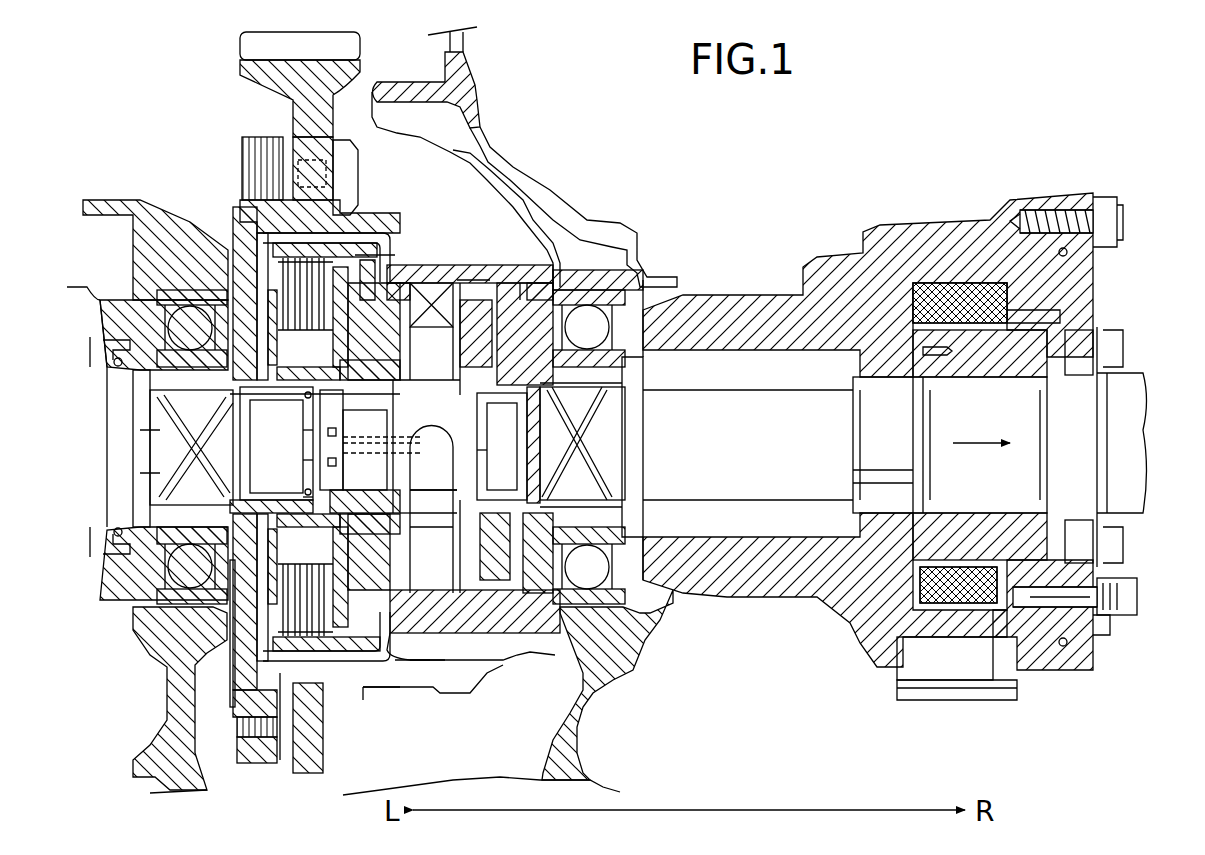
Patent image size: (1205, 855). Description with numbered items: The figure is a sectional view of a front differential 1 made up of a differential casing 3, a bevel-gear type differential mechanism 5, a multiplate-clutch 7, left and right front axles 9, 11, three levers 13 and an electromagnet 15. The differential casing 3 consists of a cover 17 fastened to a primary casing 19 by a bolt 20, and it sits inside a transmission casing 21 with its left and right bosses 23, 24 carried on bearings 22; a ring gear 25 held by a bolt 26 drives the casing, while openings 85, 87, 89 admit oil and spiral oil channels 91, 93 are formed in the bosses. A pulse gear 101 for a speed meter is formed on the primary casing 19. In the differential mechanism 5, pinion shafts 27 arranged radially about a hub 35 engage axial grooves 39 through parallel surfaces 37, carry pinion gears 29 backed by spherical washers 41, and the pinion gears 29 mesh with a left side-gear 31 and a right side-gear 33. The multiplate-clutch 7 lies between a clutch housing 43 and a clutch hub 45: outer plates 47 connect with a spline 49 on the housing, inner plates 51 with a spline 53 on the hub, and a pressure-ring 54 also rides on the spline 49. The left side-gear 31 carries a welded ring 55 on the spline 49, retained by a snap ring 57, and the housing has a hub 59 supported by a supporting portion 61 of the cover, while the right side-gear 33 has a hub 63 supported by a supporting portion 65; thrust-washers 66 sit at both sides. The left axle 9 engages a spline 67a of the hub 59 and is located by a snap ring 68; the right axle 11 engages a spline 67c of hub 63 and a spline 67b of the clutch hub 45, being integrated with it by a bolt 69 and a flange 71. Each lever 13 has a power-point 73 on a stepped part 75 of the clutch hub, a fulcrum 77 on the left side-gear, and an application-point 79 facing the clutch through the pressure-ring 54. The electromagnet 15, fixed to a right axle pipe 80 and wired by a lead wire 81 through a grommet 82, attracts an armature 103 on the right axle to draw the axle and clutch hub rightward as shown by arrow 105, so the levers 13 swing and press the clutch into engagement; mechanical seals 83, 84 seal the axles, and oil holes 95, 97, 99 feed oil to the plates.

The front differential 1 is at (902, 116).
The differential casing 3 is at (266, 134).
The bevel-gear type differential mechanism 5 is at (470, 650).
The multiplate-clutch 7 is at (333, 228).
The left front axle 9 is at (125, 470).
The right front axle 11 is at (732, 445).
The lever 13 is at (385, 226).
The electromagnet 15 is at (965, 200).
The cover 17 is at (256, 248).
The primary casing 19 is at (440, 232).
The bolt 20 is at (270, 765).
The transmission casing 21 is at (138, 198).
The bearing 22 is at (150, 610).
The left boss 23 is at (140, 515).
The right boss 24 is at (633, 513).
The ring gear 25 is at (240, 46).
The bolt 26 is at (345, 145).
The pinion shaft 27 is at (600, 390).
The pinion gear 29 is at (406, 333).
The left side-gear 31 is at (420, 560).
The right side-gear 33 is at (490, 540).
The hub 35 is at (452, 530).
The parallel surface 37 is at (445, 282).
The axial groove 39 is at (466, 300).
The spherical washer 41 is at (490, 300).
The clutch housing 43 is at (283, 212).
The clutch hub 45 is at (432, 496).
The outer plate 47 is at (270, 290).
The spline 49 is at (233, 232).
The inner plate 51 is at (272, 342).
The spline 53 is at (105, 343).
The pressure-ring 54 is at (420, 645).
The ring 55 is at (412, 661).
The snap ring 57 is at (400, 688).
The hub 59 is at (305, 395).
The supporting portion 61 is at (140, 490).
The hub 63 is at (485, 400).
The supporting portion 65 is at (530, 482).
The thrust-washer 66 is at (233, 690).
The spline 67a is at (312, 460).
The spline 67b is at (372, 484).
The spline 67c is at (503, 452).
The snap ring 68 is at (310, 440).
The bolt 69 is at (405, 525).
The flange 71 is at (343, 430).
The power-point 73 is at (398, 390).
The stepped part 75 is at (388, 535).
The fulcrum 77 is at (413, 283).
The application-point 79 is at (445, 246).
The right axle pipe 80 is at (755, 297).
The lead wire 81 is at (1140, 592).
The grommet 82 is at (1105, 625).
The mechanical seal 83 is at (115, 372).
The mechanical seal 84 is at (1073, 373).
The opening 85 is at (160, 296).
The opening 87 is at (370, 700).
The opening 89 is at (548, 322).
The spiral oil channel 91 is at (165, 425).
The spiral oil channel 93 is at (610, 440).
The oil hole 95 is at (323, 703).
The oil hole 97 is at (310, 500).
The oil hole 99 is at (382, 560).
The pulse gear 101 is at (527, 300).
The armature 103 is at (893, 330).
The arrow 105 is at (978, 440).